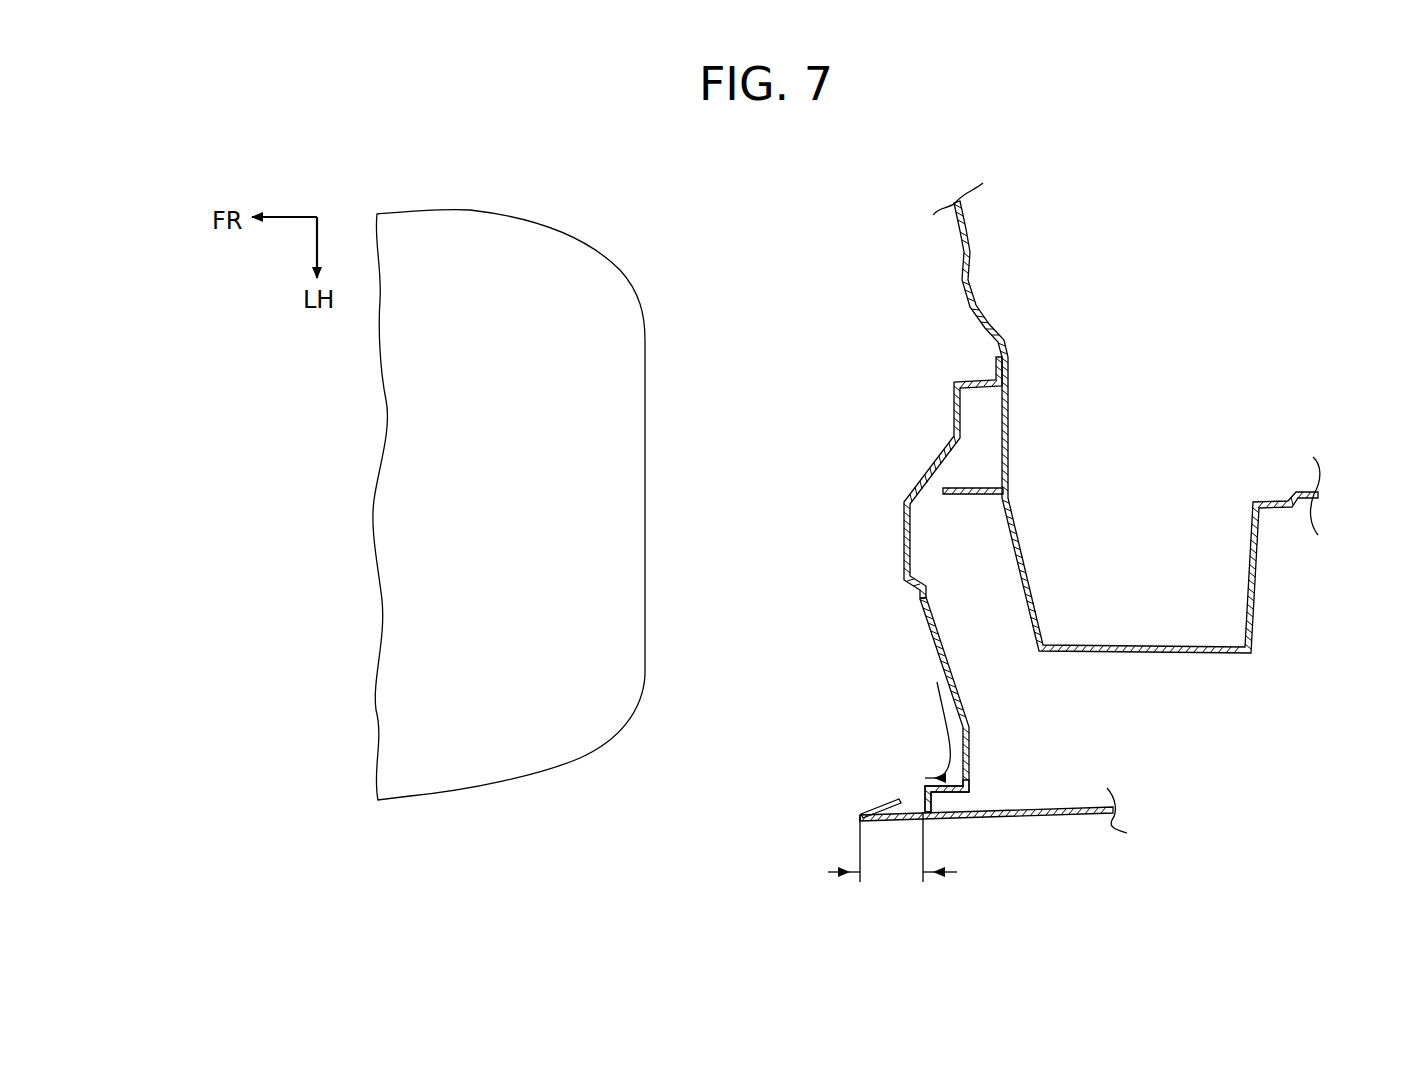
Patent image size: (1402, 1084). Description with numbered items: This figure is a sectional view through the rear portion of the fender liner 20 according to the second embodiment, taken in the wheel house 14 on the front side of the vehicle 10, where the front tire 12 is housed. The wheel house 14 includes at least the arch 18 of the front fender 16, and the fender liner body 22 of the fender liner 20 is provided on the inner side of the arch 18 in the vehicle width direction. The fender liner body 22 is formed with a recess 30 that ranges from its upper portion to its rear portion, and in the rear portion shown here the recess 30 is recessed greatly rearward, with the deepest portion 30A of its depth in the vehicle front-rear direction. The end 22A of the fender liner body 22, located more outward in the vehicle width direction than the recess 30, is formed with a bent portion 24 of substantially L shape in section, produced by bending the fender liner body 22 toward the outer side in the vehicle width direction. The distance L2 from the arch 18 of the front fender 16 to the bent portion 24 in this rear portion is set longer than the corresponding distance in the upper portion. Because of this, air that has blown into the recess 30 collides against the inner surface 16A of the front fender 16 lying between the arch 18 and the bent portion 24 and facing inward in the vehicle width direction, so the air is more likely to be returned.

The vehicle 10 is at (1073, 847).
The front tire 12 is at (531, 231).
The wheel house 14 is at (780, 750).
The front fender 16 is at (980, 823).
The inner surface of the front fender 16A is at (913, 808).
The arch 18 is at (860, 821).
The fender liner 20 is at (903, 540).
The fender liner body 22 is at (920, 613).
The end of the fender liner body 22A is at (930, 812).
The bent portion 24 is at (922, 786).
The recess 30 is at (1013, 730).
The deepest portion 30A is at (968, 774).
The distance L2 is at (893, 873).